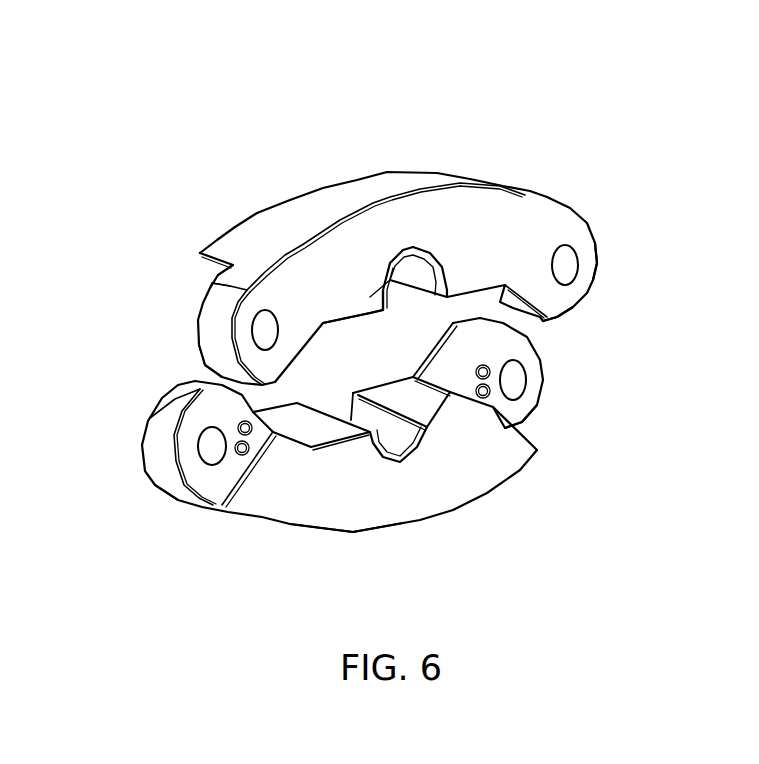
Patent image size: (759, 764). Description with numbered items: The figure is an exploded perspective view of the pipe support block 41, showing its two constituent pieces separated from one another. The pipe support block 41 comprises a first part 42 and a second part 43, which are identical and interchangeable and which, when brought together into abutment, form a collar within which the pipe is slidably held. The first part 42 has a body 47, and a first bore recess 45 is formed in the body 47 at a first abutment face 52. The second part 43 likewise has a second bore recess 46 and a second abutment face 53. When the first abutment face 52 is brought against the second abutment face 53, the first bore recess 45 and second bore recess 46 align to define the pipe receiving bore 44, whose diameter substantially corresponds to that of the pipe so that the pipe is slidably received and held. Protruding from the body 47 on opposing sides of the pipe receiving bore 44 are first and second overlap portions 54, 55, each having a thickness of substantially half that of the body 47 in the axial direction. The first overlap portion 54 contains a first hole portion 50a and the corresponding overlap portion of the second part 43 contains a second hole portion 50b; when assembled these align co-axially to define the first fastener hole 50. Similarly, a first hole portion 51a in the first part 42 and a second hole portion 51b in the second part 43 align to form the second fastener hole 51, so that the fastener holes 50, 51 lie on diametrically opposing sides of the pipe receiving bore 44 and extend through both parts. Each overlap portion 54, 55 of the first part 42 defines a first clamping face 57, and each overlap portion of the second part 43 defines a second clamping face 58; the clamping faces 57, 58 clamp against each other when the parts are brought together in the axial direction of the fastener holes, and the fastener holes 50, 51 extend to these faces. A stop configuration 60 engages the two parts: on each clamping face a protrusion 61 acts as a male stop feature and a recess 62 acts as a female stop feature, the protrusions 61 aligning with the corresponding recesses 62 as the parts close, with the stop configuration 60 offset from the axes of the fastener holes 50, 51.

The pipe support block 41 is at (560, 90).
The first part 42 is at (530, 210).
The second part 43 is at (387, 522).
The pipe receiving bore 44 is at (394, 435).
The first bore recess 45 is at (418, 258).
The second bore recess 46 is at (383, 480).
The body 47 is at (362, 190).
The first fastener hole 50 is at (232, 334).
The first hole portion 50a is at (265, 312).
The second hole portion 50b is at (198, 450).
The second fastener hole 51 is at (580, 265).
The first hole portion 51a is at (595, 272).
The second hole portion 51b is at (528, 378).
The first abutment face 52 is at (374, 318).
The second abutment face 53 is at (305, 418).
The first overlap portion 54 is at (208, 347).
The second overlap portion 55 is at (572, 312).
The first clamping face 57 is at (205, 290).
The second clamping face 58 is at (523, 322).
The stop configuration 60 is at (218, 528).
The protrusion 61 is at (269, 445).
The recess 62 is at (242, 458).